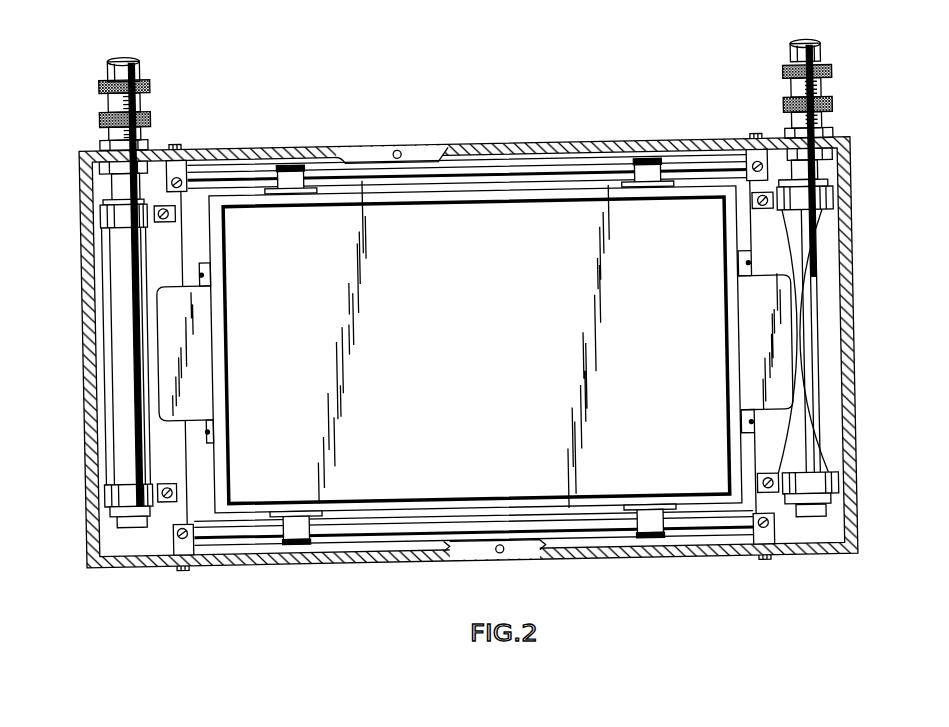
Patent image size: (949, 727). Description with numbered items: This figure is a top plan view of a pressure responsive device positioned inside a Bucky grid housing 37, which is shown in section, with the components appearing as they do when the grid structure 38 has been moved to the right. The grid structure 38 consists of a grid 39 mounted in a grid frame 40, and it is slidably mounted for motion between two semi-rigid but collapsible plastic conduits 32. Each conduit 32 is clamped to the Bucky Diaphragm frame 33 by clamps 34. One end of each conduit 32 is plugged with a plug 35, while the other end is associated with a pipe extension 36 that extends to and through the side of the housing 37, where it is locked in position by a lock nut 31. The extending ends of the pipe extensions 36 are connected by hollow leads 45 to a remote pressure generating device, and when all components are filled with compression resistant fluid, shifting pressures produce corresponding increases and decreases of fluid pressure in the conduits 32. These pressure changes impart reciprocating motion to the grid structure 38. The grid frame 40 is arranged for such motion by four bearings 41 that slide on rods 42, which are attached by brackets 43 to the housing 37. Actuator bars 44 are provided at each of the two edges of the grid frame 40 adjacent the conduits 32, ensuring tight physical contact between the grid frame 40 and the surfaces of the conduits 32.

The lock nut 31 is at (488, 123).
The plastic conduit 32 is at (464, 286).
The Bucky Diaphragm frame 33 is at (93, 175).
The clamp 34 is at (469, 343).
The plug 35 is at (471, 546).
The pipe extension 36 is at (462, 168).
The housing 37 is at (467, 337).
The grid structure 38 is at (360, 312).
The grid 39 is at (510, 312).
The grid frame 40 is at (474, 310).
The bearing 41 is at (468, 352).
The rod 42 is at (470, 355).
The bracket 43 is at (466, 350).
The actuator bar 44 is at (467, 352).
The hollow lead 45 is at (487, 89).